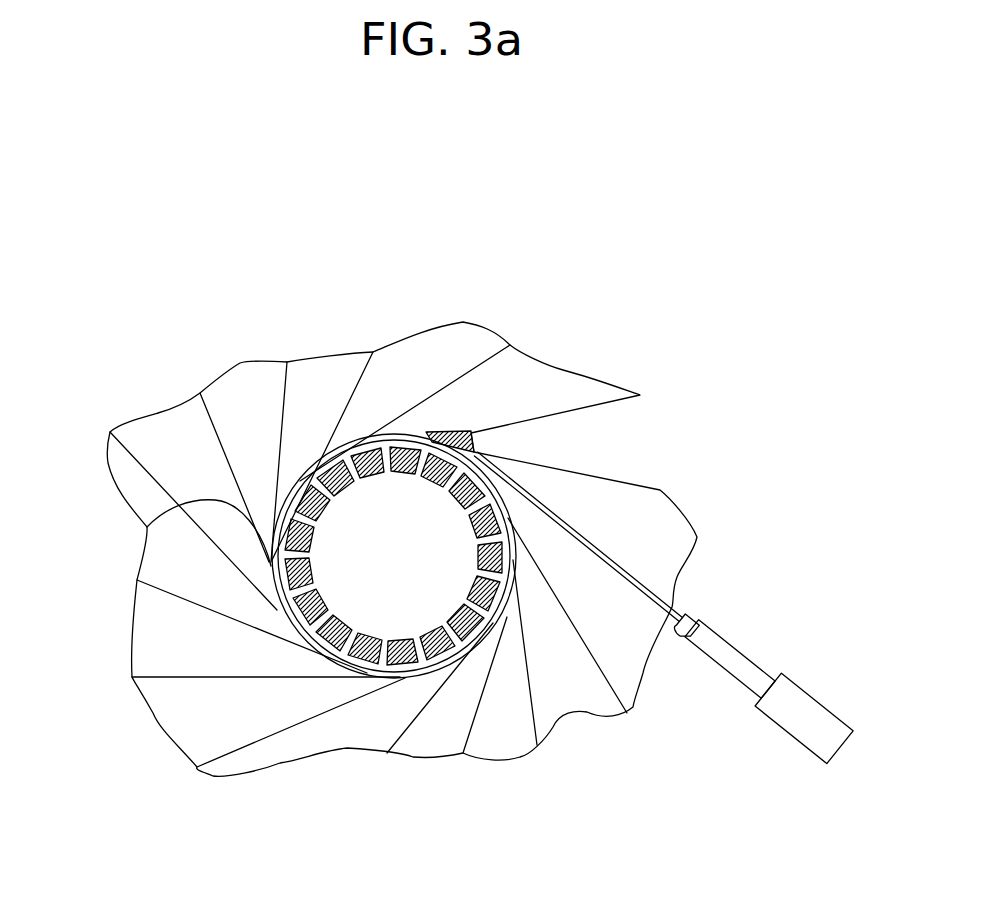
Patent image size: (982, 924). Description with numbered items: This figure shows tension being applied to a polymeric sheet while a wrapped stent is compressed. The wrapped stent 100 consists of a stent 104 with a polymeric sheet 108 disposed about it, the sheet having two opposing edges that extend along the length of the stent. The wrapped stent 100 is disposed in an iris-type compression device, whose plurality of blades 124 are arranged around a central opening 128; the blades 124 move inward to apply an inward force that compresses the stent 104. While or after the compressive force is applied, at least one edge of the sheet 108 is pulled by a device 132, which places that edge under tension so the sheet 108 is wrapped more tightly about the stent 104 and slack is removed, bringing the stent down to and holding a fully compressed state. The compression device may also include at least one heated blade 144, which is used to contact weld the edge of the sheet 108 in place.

The wrapped stent 100 is at (326, 778).
The stent 104 is at (147, 527).
The polymeric sheet 108 is at (675, 607).
The blades 124 is at (240, 363).
The opening 128 is at (437, 593).
The device 132 is at (812, 697).
The heated blade 144 is at (471, 433).